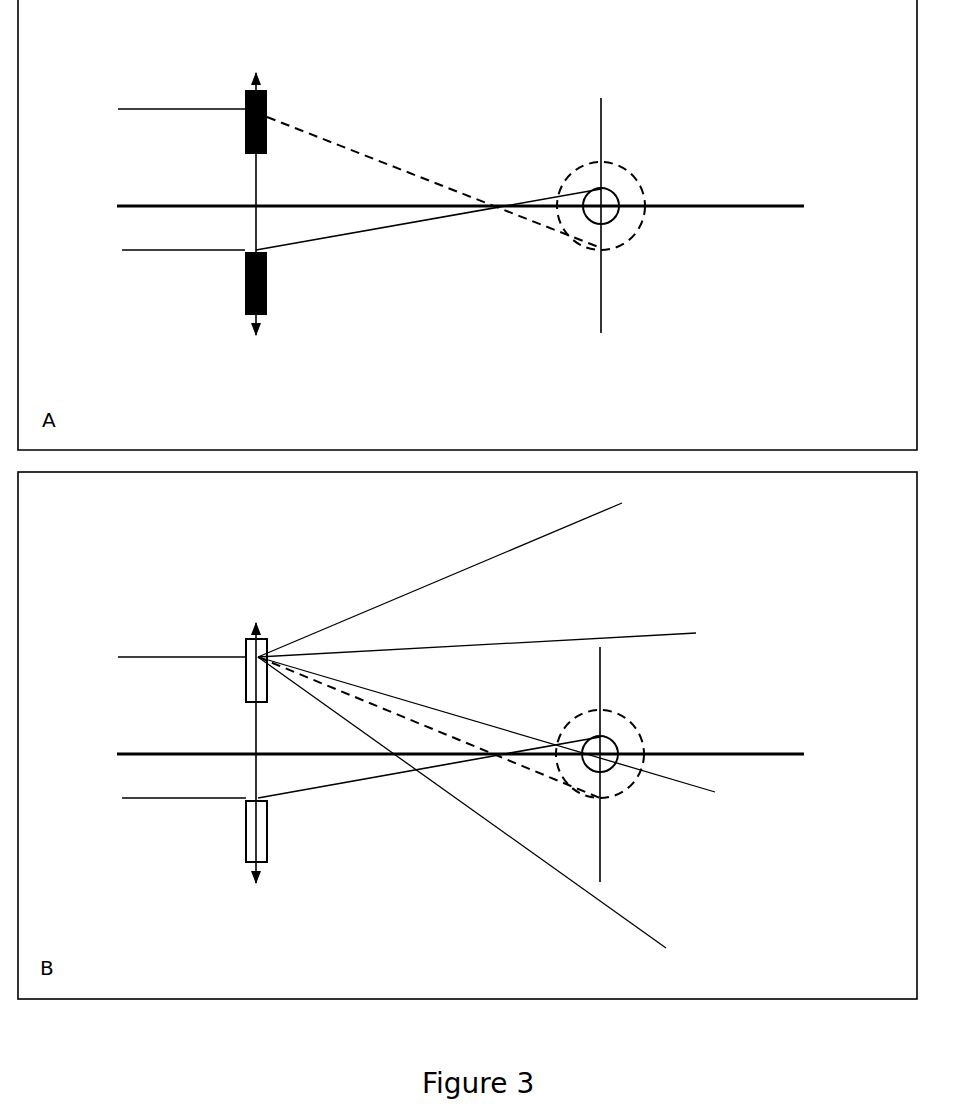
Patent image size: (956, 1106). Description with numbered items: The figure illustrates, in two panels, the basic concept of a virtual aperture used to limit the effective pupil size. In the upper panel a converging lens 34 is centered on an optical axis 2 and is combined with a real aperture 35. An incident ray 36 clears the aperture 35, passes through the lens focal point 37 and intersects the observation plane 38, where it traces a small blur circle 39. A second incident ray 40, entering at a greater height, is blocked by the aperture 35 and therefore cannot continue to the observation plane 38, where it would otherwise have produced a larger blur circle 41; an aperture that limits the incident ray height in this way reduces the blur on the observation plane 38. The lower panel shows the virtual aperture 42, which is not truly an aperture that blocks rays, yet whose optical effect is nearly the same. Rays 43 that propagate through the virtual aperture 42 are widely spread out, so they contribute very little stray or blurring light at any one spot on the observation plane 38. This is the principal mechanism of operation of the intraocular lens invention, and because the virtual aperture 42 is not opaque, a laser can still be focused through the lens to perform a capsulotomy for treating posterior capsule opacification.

The optical axis 2 is at (460, 191).
The converging lens 34 is at (259, 460).
The aperture 35 is at (460, 503).
The incident ray 36 is at (184, 546).
The lens focal point 37 is at (428, 457).
The observation plane 38 is at (605, 465).
The small blur circle 39 is at (615, 190).
The incident ray 40 is at (182, 367).
The larger blur circle 41 is at (627, 248).
The virtual aperture 42 is at (273, 831).
The rays 43 is at (327, 703).